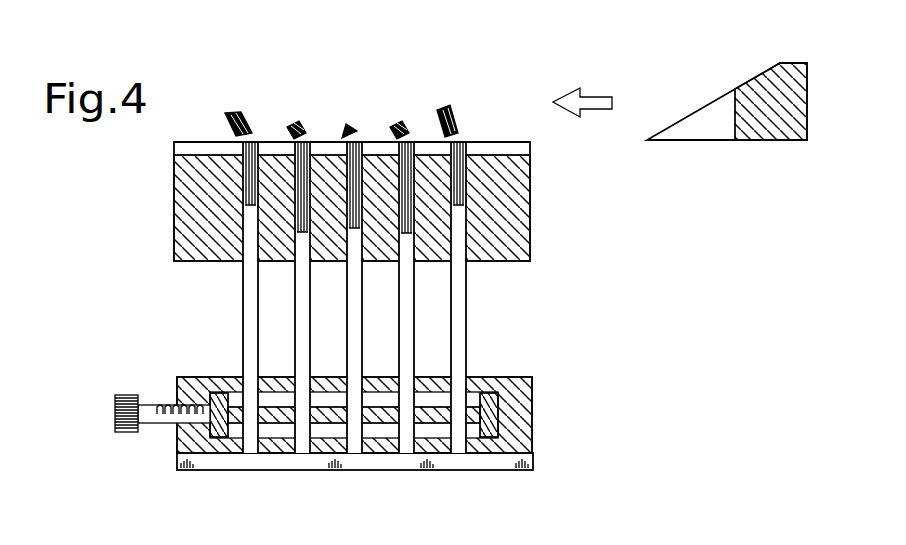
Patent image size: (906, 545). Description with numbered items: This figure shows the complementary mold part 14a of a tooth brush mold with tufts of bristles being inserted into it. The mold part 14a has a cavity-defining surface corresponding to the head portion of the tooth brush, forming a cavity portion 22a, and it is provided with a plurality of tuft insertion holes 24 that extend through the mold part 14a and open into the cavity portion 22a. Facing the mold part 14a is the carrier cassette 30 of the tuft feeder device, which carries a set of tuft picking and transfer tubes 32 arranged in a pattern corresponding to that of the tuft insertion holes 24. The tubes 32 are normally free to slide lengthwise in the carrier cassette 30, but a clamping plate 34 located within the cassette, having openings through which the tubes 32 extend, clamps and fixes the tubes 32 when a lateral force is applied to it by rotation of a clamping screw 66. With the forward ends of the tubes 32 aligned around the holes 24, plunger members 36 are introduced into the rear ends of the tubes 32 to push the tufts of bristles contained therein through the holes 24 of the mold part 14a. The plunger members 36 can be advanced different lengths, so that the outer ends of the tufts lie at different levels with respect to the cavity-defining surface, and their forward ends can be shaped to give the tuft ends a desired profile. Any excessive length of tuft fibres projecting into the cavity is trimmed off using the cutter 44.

The complementary mold part 14a is at (513, 170).
The cavity portion 22a is at (380, 150).
The tuft insertion holes 24 is at (467, 222).
The carrier cassette 30 is at (532, 415).
The tuft picking and transfer tubes 32 is at (240, 303).
The clamping plate 34 is at (435, 450).
The plunger members 36 is at (458, 345).
The cutter 44 is at (768, 130).
The clamping screw 66 is at (157, 425).